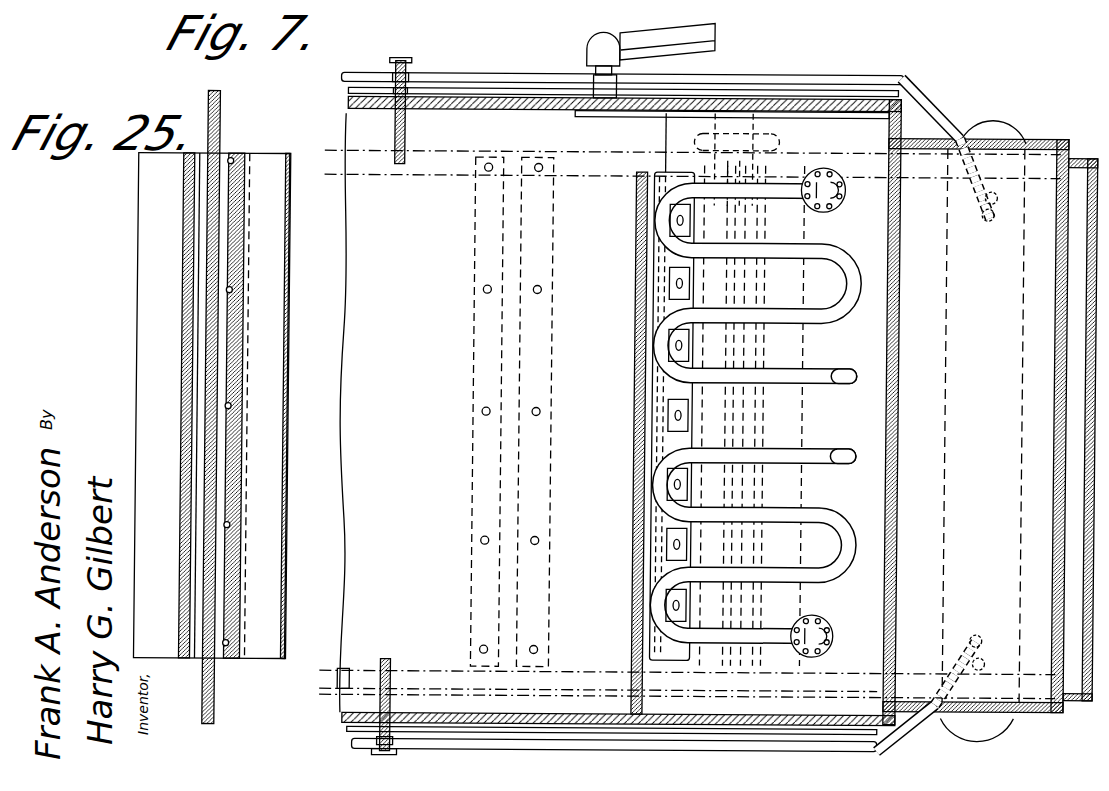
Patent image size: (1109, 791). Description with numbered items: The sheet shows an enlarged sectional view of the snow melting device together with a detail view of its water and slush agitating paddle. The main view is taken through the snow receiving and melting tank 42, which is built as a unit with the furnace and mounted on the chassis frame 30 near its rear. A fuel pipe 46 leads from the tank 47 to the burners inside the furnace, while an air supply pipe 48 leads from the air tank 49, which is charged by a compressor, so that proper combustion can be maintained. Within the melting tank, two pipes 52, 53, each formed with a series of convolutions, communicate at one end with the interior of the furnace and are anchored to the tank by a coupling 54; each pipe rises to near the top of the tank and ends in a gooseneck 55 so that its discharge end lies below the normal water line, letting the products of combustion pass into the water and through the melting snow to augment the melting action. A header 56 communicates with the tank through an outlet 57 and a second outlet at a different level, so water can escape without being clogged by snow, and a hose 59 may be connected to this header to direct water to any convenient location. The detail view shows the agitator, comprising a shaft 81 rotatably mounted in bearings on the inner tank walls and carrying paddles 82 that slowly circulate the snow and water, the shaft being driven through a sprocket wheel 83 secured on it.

In FIG. 7, the chassis frame 30 is at (341, 697).
In FIG. 7, the snow receiving and melting tank 42 is at (778, 98).
In FIG. 7, the fuel pipe 46 is at (445, 75).
In FIG. 7, the tank 47 is at (990, 426).
In FIG. 7, the air supply pipe 48 is at (942, 122).
In FIG. 7, the air tank 49 is at (1000, 130).
In FIG. 7, the pipe 52 is at (747, 369).
In FIG. 7, the pipe 53 is at (753, 452).
In FIG. 7, the coupling 54 is at (843, 192).
In FIG. 7, the gooseneck 55 is at (832, 386).
In FIG. 7, the header 56 is at (583, 60).
In FIG. 7, the outlet 57 is at (597, 113).
In FIG. 7, the hose 59 is at (661, 40).
In FIG. 7, the shaft 81 is at (756, 129).
In FIG. 25, the shaft 81 is at (214, 667).
In FIG. 7, the paddles 82 is at (637, 548).
In FIG. 25, the paddles 82 is at (145, 214).
In FIG. 7, the sprocket wheel 83 is at (716, 98).
In FIG. 25, the sprocket wheel 83 is at (220, 310).